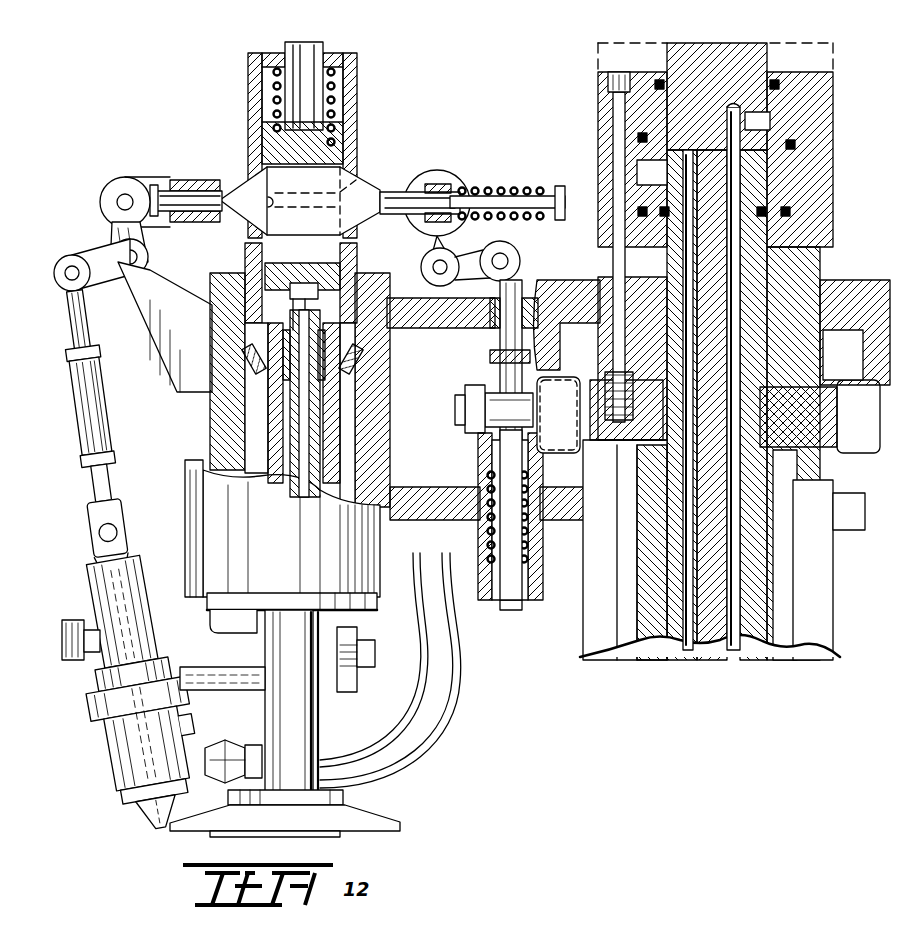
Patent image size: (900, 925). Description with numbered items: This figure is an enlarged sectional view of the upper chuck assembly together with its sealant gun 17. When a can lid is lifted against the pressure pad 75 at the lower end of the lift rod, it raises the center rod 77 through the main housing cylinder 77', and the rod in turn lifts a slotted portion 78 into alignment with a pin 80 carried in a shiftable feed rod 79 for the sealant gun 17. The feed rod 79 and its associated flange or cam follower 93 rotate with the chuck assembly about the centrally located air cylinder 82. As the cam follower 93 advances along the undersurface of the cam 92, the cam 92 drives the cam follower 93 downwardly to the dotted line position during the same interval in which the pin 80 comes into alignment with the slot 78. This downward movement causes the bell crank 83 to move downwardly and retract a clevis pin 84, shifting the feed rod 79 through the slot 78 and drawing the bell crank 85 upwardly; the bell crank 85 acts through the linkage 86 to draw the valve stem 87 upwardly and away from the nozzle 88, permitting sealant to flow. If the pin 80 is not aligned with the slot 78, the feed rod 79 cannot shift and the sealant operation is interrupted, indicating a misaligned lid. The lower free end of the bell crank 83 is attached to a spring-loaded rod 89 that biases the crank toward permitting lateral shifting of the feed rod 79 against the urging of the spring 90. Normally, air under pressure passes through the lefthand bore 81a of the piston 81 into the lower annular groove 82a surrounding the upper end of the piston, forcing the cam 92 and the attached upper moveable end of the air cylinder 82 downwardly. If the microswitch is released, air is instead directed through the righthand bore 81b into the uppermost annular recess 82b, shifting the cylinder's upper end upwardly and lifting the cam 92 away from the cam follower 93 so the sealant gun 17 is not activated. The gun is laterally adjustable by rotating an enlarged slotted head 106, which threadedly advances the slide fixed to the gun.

The sealant gun 17 is at (118, 742).
The pressure pad 75 is at (358, 832).
The center rod 77 is at (256, 403).
The main housing cylinder 77' is at (322, 435).
The slotted portion 78 is at (350, 208).
The feed rod 79 is at (186, 192).
The pin 80 is at (266, 200).
The piston 81 is at (728, 182).
The lefthand bore 81a is at (678, 640).
The righthand bore 81b is at (725, 640).
The air cylinder 82 is at (608, 100).
The lower annular groove 82a is at (648, 172).
The uppermost annular recess 82b is at (770, 122).
The bell crank 83 is at (518, 255).
The clevis pin 84 is at (433, 186).
The bell crank 85 is at (122, 252).
The linkage 86 is at (120, 508).
The valve stem 87 is at (108, 612).
The nozzle 88 is at (155, 815).
The spring-loaded rod 89 is at (505, 340).
The spring 90 is at (512, 190).
The cam 92 is at (540, 288).
The cam follower 93 is at (570, 452).
The enlarged slotted head 106 is at (80, 650).